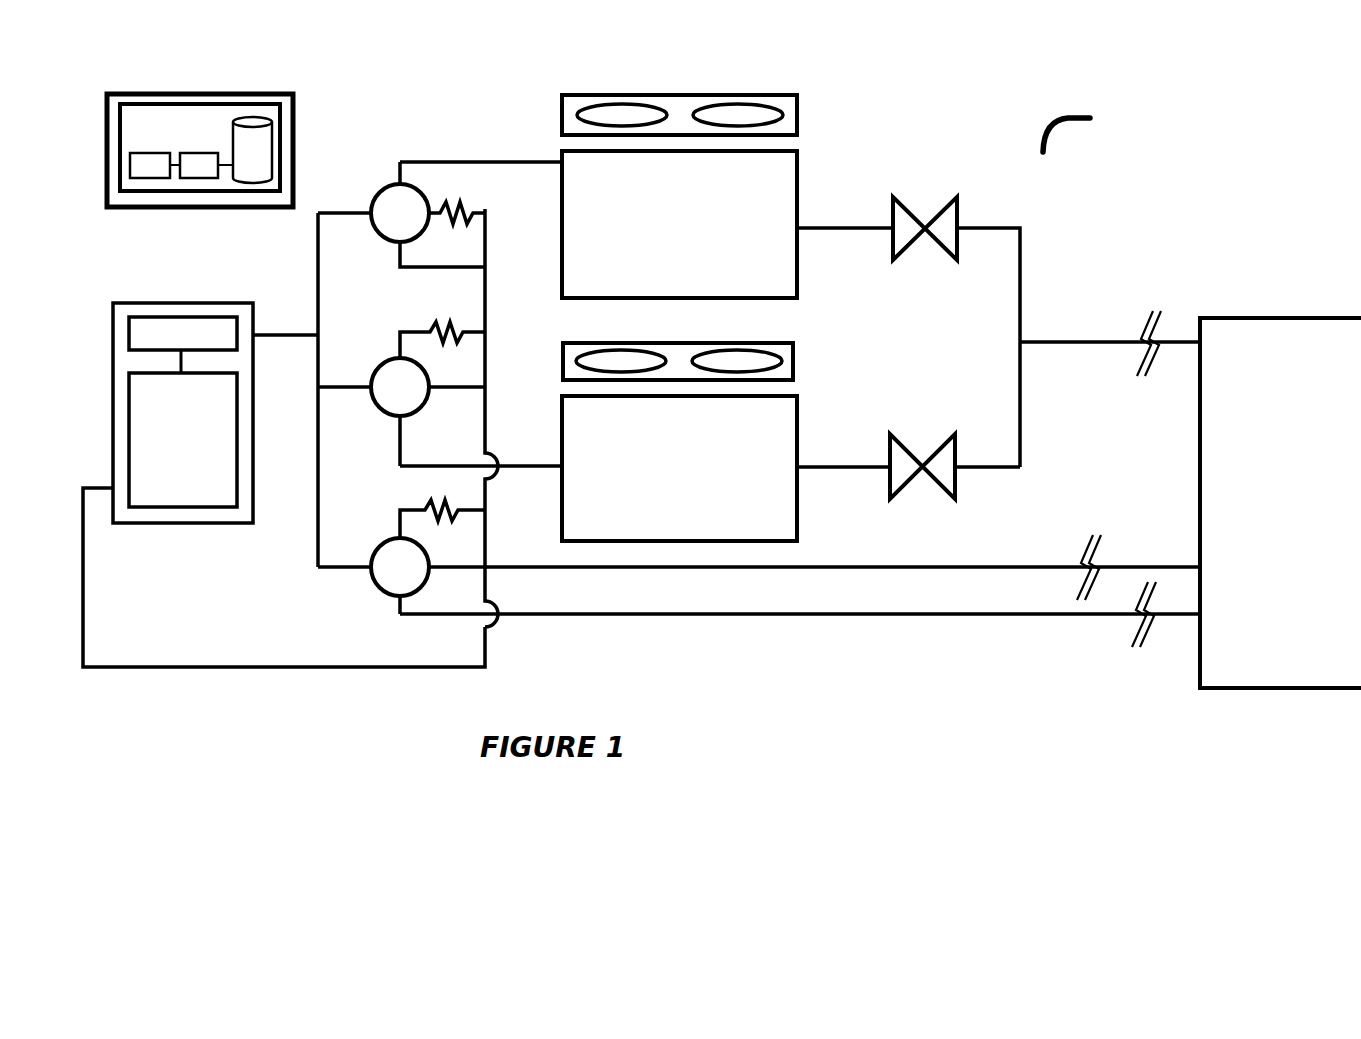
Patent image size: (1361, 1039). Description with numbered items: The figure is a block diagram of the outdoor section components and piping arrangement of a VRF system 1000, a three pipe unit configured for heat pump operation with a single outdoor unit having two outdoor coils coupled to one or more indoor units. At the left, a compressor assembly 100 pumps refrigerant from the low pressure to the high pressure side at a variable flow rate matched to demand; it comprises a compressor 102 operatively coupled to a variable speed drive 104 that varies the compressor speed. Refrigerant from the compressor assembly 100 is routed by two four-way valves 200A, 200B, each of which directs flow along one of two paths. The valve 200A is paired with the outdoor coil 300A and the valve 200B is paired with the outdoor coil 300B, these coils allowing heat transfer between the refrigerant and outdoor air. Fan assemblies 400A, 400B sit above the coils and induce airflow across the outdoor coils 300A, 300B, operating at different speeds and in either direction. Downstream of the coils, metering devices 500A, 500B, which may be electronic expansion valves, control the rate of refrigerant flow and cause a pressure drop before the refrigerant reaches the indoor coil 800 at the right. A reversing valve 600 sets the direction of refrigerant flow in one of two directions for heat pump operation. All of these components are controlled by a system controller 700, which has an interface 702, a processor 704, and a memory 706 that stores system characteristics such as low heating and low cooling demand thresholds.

The compressor assembly 100 is at (168, 300).
The compressor 102 is at (208, 452).
The variable speed drive 104 is at (228, 348).
The valve 200A is at (380, 233).
The valve 200B is at (373, 400).
The outdoor coil 300A is at (723, 251).
The outdoor coil 300B is at (718, 490).
The fan assembly 400A is at (668, 95).
The fan assembly 400B is at (680, 343).
The metering device 500A is at (915, 246).
The metering device 500B is at (912, 482).
The reversing valve 600 is at (372, 579).
The system controller 700 is at (195, 138).
The interface 702 is at (140, 170).
The processor 704 is at (193, 172).
The memory 706 is at (372, 128).
The indoor coil 800 is at (1312, 503).
The VRF system 1000 is at (1100, 125).